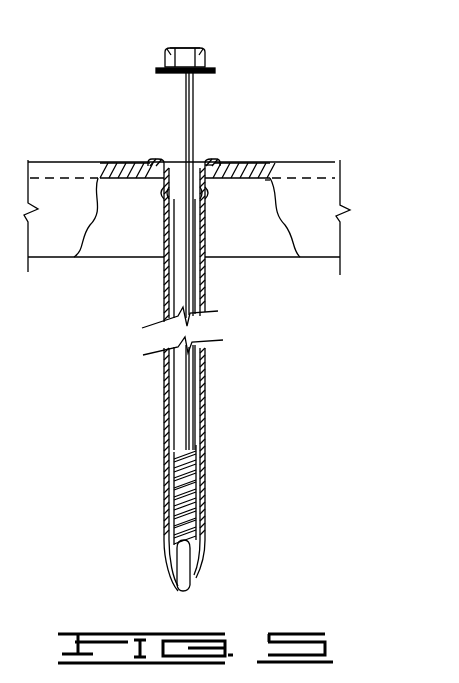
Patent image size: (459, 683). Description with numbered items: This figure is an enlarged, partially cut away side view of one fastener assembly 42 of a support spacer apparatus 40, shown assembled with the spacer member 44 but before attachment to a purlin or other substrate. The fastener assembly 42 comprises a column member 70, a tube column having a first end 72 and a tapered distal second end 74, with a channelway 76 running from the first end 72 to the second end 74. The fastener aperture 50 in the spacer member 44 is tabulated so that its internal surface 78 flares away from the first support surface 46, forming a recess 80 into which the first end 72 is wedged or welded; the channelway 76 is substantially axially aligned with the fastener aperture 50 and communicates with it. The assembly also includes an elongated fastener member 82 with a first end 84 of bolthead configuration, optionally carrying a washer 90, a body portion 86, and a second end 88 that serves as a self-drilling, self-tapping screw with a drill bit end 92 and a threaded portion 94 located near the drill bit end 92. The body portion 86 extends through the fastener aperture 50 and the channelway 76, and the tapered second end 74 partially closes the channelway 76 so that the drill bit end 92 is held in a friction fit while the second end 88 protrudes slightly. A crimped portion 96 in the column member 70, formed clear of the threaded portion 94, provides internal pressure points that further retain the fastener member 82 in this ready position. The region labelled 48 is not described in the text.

The support spacer apparatus 40 is at (75, 161).
The fastener assembly 42 is at (195, 49).
The spacer member 44 is at (152, 163).
The first support surface 46 is at (245, 163).
The core 48 is at (268, 180).
The fastener aperture 50 is at (202, 163).
The column member 70 is at (204, 297).
The first end 72 is at (164, 239).
The second end 74 is at (202, 560).
The channelway 76 is at (196, 398).
The internal surface 78 is at (167, 158).
The recess 80 is at (206, 177).
The fastener member 82 is at (187, 101).
The first end 84 is at (207, 62).
The body portion 86 is at (176, 296).
The second end 88 is at (180, 548).
The washer 90 is at (162, 75).
The drill bit end 92 is at (190, 580).
The threaded portion 94 is at (199, 488).
The crimped portion 96 is at (163, 193).